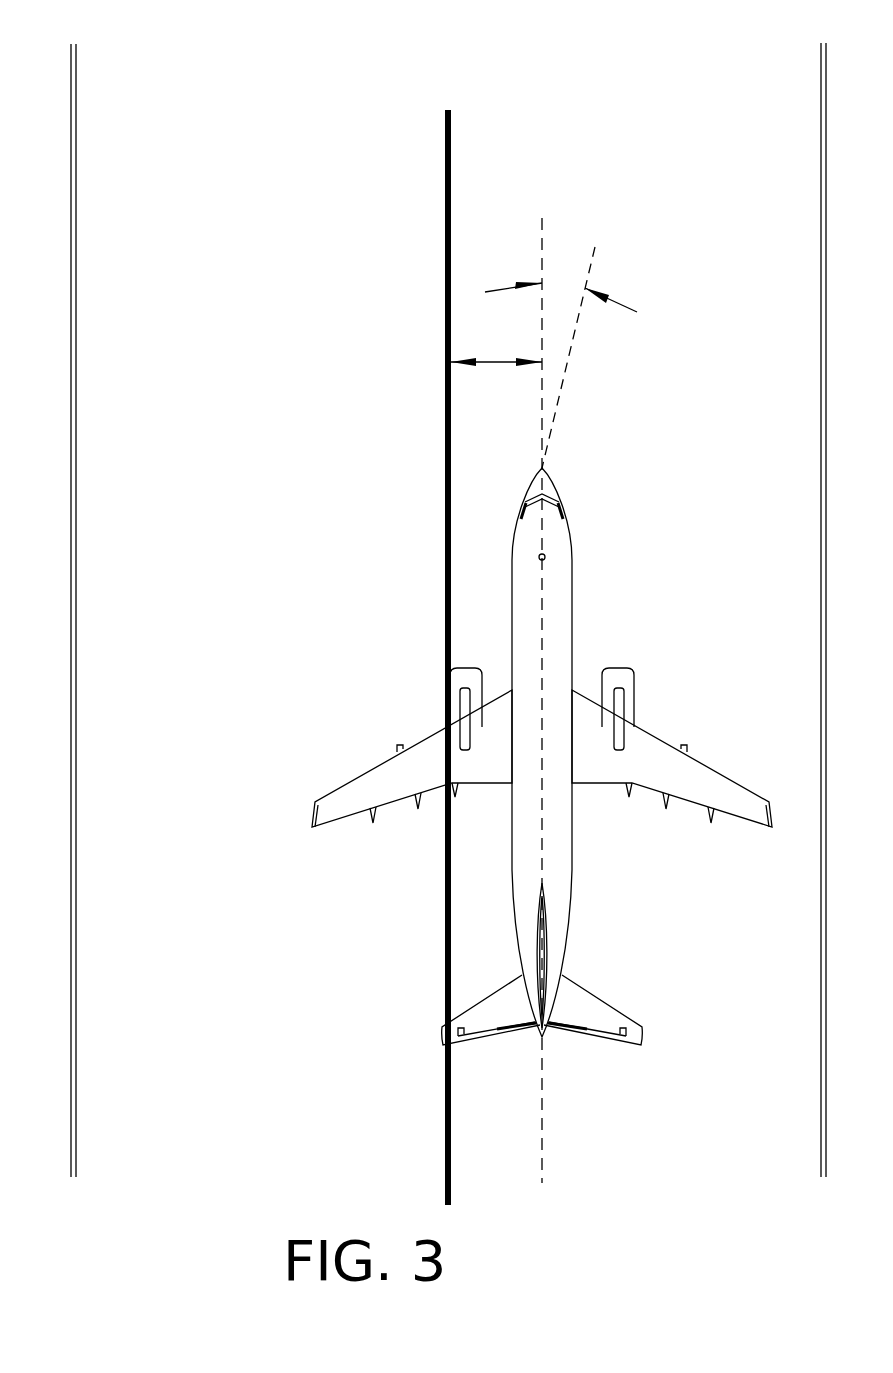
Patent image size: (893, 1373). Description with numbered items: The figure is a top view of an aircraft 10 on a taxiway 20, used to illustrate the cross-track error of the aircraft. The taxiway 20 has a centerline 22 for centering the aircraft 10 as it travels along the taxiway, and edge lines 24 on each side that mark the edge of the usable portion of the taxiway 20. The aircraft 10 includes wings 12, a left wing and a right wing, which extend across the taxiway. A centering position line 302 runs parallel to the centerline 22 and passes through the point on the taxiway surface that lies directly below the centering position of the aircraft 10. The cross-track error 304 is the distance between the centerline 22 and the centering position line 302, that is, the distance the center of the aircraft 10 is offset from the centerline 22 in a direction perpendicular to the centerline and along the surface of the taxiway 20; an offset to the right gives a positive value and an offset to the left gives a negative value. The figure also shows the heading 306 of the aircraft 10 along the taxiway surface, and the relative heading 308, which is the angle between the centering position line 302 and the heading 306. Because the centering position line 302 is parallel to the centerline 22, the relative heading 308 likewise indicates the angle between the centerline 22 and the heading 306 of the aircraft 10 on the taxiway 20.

The aircraft 10 is at (525, 600).
The wings 12 is at (377, 778).
The taxiway 20 is at (675, 68).
The centerline 22 is at (452, 168).
The edge lines 24 is at (76, 283).
The centering position line 302 is at (543, 230).
The cross-track error 304 is at (493, 362).
The heading 306 is at (592, 263).
The relative heading 308 is at (630, 308).